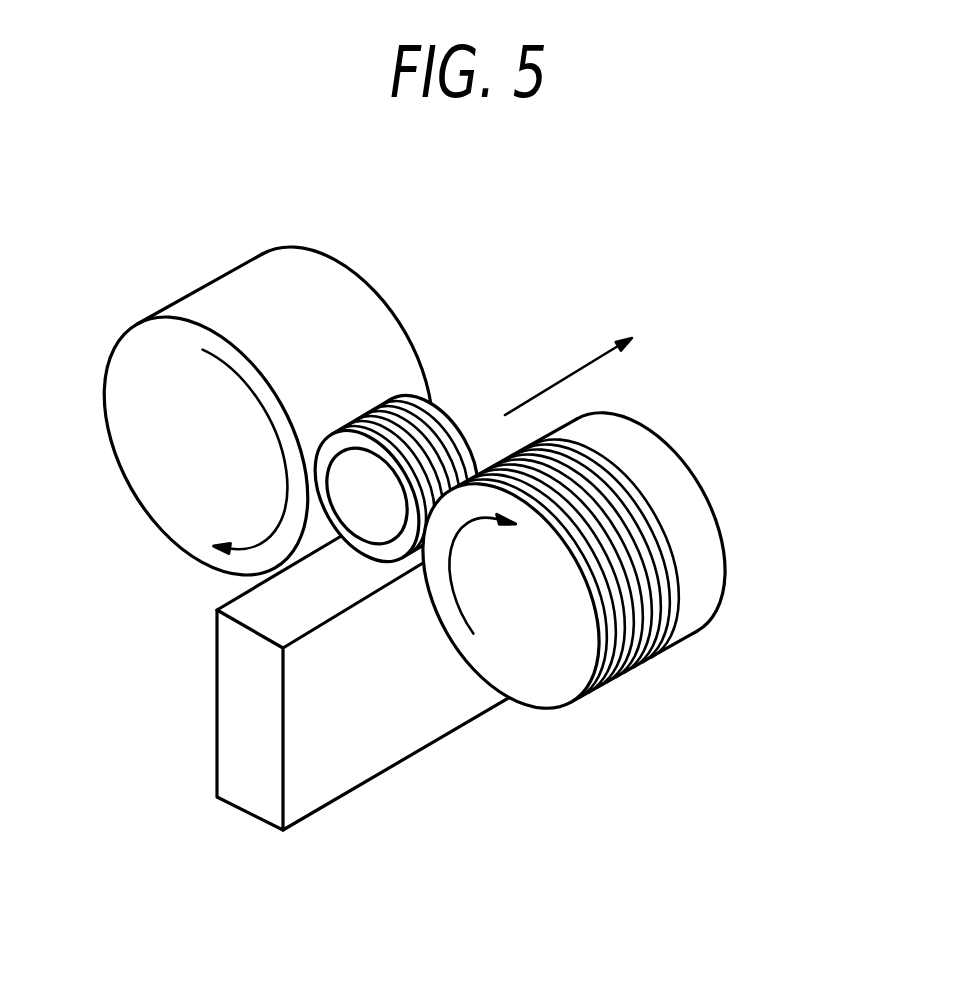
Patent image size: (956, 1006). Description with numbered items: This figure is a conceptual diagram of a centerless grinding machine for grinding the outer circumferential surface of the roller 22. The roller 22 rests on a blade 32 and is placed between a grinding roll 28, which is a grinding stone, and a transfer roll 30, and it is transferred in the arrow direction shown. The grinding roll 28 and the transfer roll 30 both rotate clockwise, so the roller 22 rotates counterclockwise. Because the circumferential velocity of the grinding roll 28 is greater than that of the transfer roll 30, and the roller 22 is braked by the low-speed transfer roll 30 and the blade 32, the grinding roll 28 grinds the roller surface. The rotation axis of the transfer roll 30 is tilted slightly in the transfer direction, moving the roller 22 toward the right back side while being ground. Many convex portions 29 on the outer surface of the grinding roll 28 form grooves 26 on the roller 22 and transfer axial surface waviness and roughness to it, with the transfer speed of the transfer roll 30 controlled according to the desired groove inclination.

The roller 22 is at (450, 427).
The grooves 26 is at (427, 393).
The grinding roll 28 is at (604, 560).
The convex portions 29 is at (627, 530).
The transfer roll 30 is at (348, 268).
The blade 32 is at (367, 763).